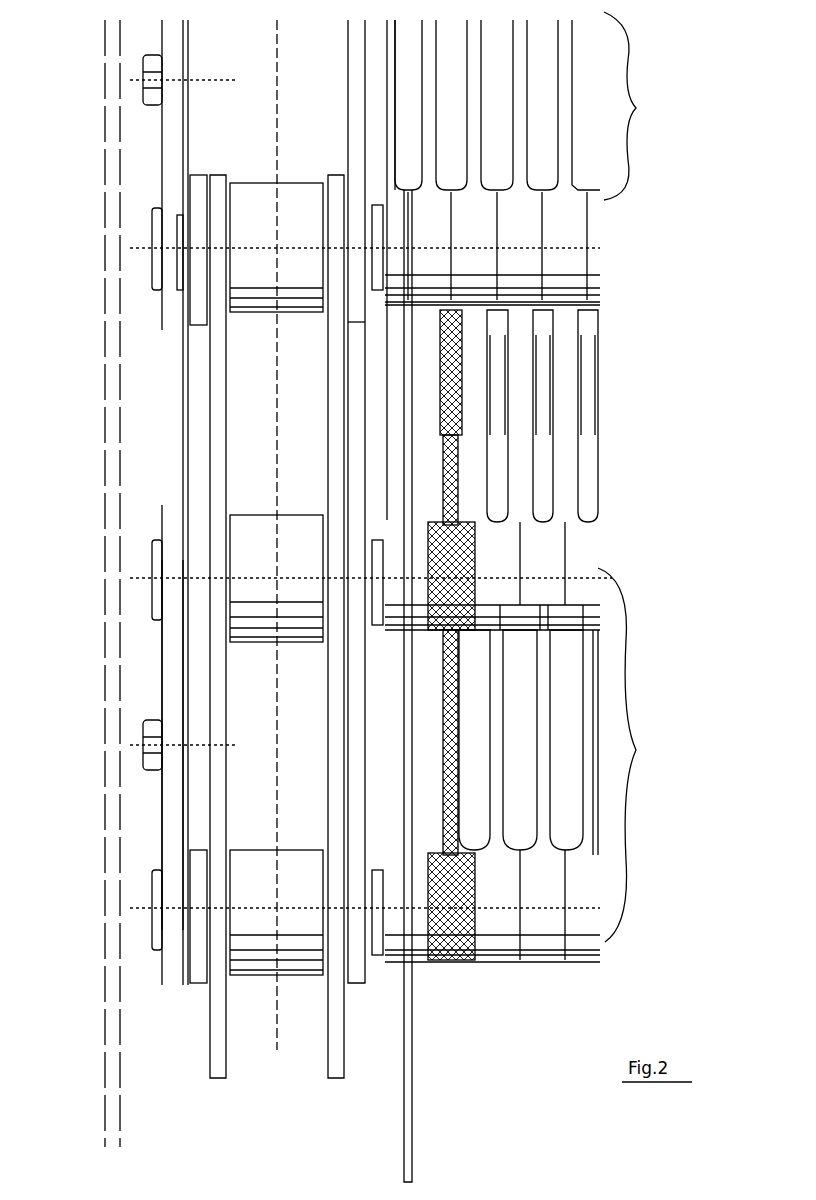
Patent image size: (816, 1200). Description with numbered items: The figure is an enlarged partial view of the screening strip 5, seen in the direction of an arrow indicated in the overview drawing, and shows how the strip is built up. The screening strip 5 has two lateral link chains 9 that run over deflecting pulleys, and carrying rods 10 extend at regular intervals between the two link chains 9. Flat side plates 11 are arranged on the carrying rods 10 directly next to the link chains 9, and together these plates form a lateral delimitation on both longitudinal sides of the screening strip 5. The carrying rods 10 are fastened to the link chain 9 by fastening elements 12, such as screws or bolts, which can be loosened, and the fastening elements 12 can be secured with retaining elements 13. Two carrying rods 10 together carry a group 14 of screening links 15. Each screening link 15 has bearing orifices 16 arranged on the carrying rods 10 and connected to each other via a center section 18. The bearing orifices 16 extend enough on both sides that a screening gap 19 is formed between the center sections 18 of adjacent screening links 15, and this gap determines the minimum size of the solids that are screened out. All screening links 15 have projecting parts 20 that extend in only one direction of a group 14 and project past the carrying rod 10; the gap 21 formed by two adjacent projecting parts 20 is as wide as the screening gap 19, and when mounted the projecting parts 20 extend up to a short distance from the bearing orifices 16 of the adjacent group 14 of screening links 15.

The screening strip 5 is at (616, 366).
The link chain 9 is at (215, 345).
The carrying rod 10 is at (380, 265).
The side plate 11 is at (385, 455).
The fastening element 12 is at (152, 590).
The retaining element 13 is at (170, 775).
The group of screening links 14 is at (531, 477).
The screening link 15 is at (562, 95).
The bearing orifice 16 is at (575, 275).
The center section 18 is at (572, 845).
The screening gap 19 is at (560, 702).
The projecting part 20 is at (578, 395).
The gap 21 is at (560, 475).